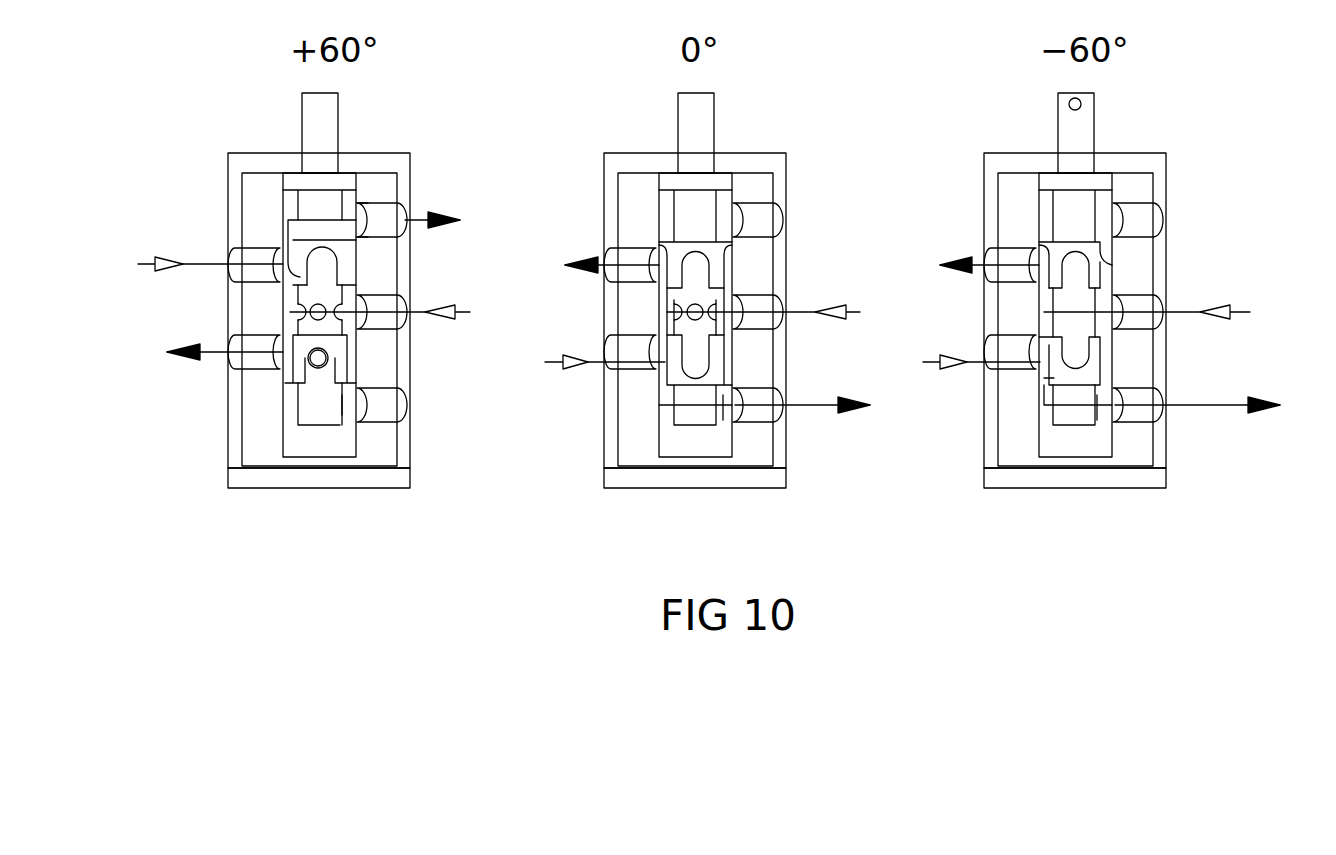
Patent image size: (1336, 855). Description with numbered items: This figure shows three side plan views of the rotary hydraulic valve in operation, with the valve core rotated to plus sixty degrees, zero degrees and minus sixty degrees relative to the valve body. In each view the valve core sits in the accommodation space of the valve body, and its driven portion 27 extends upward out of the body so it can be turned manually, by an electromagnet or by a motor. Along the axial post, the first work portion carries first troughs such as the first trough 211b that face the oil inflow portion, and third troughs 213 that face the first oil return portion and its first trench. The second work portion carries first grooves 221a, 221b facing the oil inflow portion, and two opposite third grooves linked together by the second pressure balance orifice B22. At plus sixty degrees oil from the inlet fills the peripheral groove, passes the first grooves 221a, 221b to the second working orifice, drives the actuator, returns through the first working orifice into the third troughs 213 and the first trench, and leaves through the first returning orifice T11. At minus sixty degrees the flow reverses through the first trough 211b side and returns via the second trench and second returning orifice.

The driven portion 27 is at (388, 127).
The third troughs 213 is at (254, 220).
The first trough 211b is at (232, 249).
The first groove 221a is at (762, 363).
The first groove 221b is at (1141, 363).
The first returning orifice T11 is at (459, 183).
The second pressure balance orifice B22 is at (292, 441).